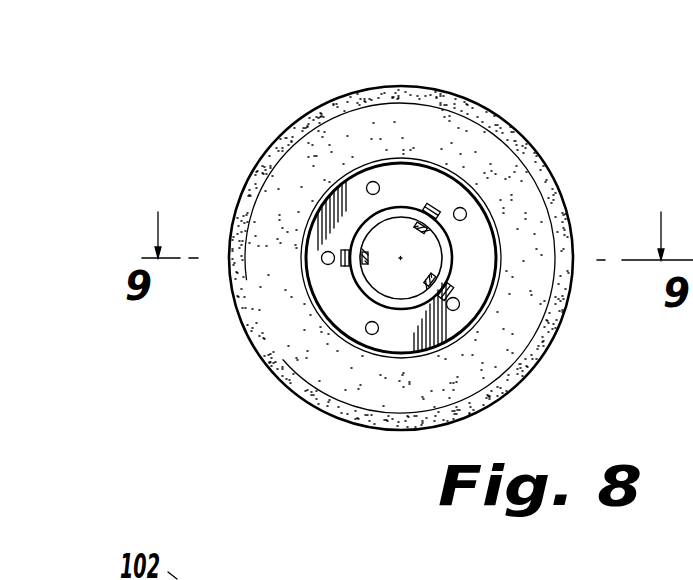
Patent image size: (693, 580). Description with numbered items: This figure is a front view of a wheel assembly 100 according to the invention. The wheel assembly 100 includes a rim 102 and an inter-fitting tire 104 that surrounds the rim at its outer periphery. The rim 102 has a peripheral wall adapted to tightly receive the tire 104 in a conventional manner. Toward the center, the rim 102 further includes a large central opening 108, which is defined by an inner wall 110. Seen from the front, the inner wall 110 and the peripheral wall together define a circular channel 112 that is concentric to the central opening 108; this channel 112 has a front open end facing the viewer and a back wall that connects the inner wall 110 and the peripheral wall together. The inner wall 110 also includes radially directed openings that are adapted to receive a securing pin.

The wheel assembly 100 is at (578, 168).
The rim 102 is at (315, 198).
The tire 104 is at (523, 377).
The central opening 108 is at (400, 275).
The inner wall 110 is at (372, 277).
The circular channel 112 is at (465, 279).